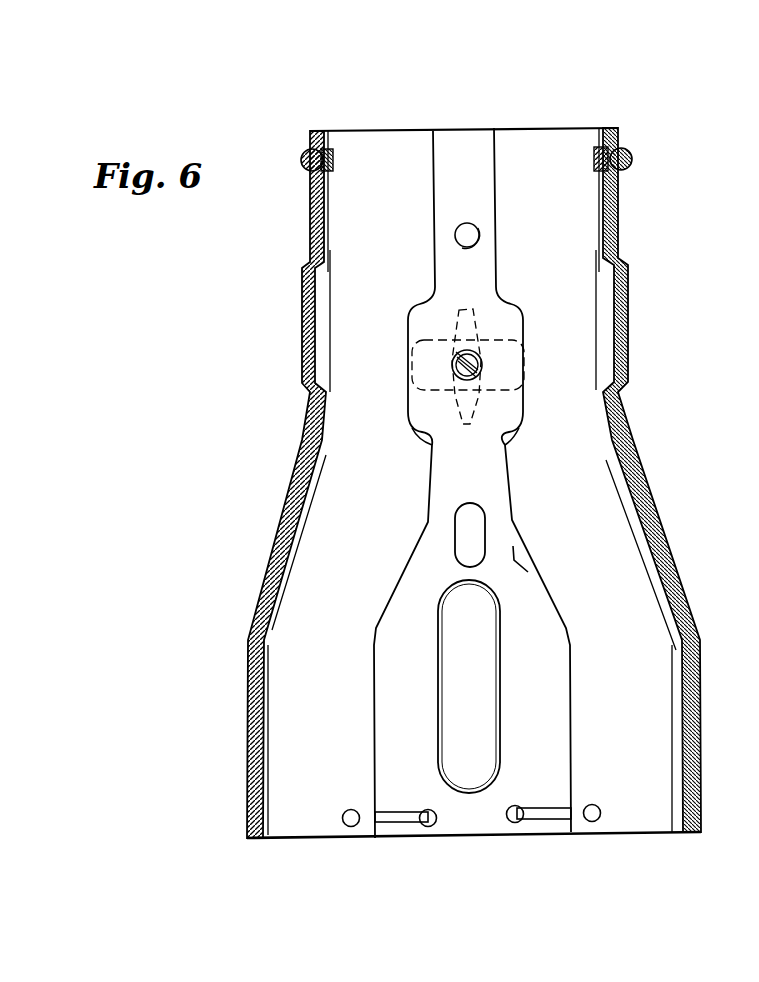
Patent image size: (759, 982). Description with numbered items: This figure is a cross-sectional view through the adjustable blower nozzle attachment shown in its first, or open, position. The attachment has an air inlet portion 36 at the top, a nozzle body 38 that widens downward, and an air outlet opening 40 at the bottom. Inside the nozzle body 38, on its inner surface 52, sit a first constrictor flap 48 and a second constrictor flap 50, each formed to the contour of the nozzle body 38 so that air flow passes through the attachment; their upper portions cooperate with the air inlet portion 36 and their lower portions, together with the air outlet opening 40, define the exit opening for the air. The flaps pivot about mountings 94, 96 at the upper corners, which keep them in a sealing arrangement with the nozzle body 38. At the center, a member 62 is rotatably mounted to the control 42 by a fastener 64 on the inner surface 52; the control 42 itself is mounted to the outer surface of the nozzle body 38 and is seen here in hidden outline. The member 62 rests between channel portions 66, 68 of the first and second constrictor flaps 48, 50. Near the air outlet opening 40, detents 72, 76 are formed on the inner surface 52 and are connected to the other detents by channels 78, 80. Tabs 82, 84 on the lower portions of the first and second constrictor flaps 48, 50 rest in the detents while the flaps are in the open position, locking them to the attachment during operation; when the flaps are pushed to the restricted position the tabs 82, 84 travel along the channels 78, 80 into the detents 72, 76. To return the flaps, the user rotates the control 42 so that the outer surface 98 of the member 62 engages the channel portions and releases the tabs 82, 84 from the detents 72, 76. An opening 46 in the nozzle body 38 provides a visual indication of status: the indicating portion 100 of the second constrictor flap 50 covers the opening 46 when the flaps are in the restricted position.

The air inlet portion 36 is at (460, 130).
The nozzle body 38 is at (245, 656).
The air outlet opening 40 is at (660, 833).
The control 42 is at (513, 342).
The opening 46 is at (487, 529).
The first constrictor flap 48 is at (540, 152).
The second constrictor flap 50 is at (380, 152).
The inner surface 52 is at (472, 838).
The member 62 is at (524, 335).
The fastener 64 is at (455, 368).
The channel portion 66 is at (515, 417).
The channel portion 68 is at (418, 427).
The detent 72 is at (518, 834).
The detent 76 is at (427, 838).
The channel 78 is at (560, 834).
The channel 80 is at (388, 838).
The tab 82 is at (595, 834).
The tab 84 is at (348, 838).
The mounting 94 is at (627, 158).
The mounting 96 is at (302, 164).
The outer surface 98 is at (525, 404).
The indicating portion 100 is at (528, 570).